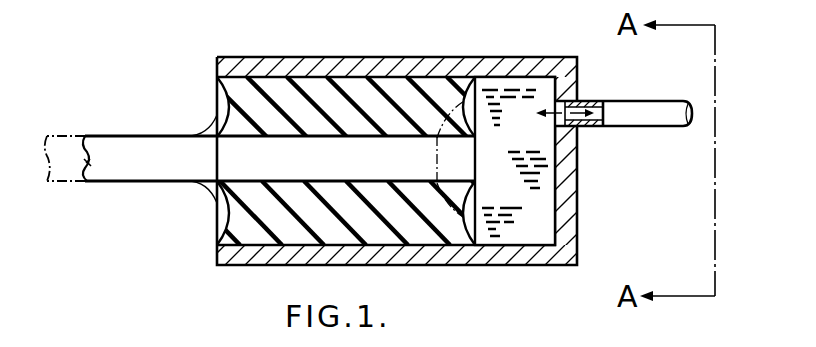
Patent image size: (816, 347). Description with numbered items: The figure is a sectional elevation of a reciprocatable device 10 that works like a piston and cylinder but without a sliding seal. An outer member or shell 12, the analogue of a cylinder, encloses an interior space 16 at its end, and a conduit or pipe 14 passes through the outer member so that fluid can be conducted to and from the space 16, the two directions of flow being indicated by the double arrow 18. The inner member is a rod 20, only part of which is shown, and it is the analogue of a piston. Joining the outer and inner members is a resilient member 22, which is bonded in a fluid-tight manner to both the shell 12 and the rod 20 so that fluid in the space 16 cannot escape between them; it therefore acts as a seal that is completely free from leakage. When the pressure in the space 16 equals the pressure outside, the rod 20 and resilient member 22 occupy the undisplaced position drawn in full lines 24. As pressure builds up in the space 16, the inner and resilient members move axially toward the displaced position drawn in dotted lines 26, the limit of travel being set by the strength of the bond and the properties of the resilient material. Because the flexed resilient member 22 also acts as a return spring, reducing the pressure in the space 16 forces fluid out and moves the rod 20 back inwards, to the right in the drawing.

The reciprocatable device 10 is at (368, 163).
The outer member or shell 12 is at (437, 68).
The conduit or pipe 14 is at (665, 112).
The interior space 16 is at (532, 195).
The double arrow 18 is at (583, 127).
The rod 20 is at (117, 143).
The resilient member 22 is at (315, 95).
The full lines 24 is at (218, 118).
The dotted lines 26 is at (202, 123).